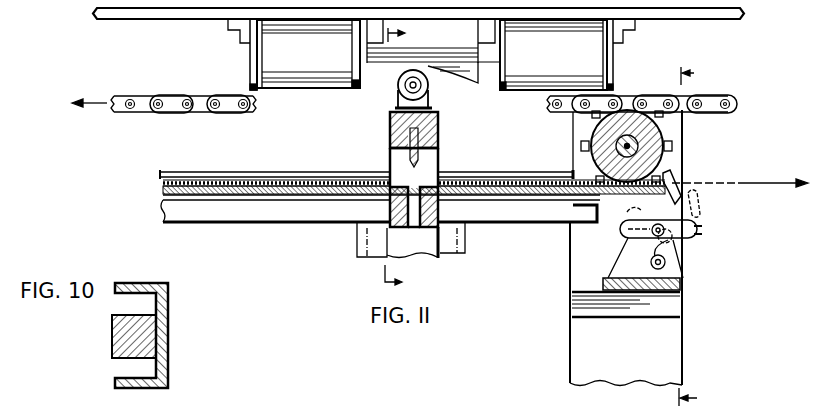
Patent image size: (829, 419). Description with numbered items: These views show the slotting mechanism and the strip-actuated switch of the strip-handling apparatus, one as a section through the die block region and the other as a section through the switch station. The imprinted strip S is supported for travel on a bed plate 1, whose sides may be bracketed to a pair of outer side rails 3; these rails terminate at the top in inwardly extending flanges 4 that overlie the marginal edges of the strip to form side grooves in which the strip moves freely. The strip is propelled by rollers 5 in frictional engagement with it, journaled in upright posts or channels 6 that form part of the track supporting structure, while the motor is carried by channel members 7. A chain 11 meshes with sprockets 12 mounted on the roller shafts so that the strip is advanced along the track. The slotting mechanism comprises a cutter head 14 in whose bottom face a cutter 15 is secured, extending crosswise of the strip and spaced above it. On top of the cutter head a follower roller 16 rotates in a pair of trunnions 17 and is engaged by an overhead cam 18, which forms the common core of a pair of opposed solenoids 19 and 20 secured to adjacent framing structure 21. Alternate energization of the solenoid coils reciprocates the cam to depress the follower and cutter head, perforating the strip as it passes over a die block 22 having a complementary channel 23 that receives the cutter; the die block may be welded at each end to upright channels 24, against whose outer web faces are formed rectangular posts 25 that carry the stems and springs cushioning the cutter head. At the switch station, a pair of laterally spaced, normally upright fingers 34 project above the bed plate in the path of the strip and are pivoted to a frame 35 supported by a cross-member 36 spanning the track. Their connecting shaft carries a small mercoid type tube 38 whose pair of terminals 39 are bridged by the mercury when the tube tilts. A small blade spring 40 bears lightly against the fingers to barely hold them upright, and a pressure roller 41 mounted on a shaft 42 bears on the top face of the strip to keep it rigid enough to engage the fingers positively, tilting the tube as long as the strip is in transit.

In FIG. 11, the bed plate 1 is at (162, 187).
In FIG. 11, the outer side rails 3 is at (172, 207).
In FIG. 11, the inwardly extending flanges 4 is at (160, 174).
In FIG. 11, the rollers 5 is at (695, 237).
In FIG. 11, the upright posts or channels 6 is at (672, 338).
In FIG. 11, the channel members 7 is at (400, 160).
In FIG. 11, the chain 11 is at (133, 97).
In FIG. 11, the sprockets 12 is at (585, 143).
In FIG. 11, the cutter head 14 is at (390, 127).
In FIG. 11, the cutter 15 is at (409, 162).
In FIG. 11, the roller 16 is at (398, 93).
In FIG. 11, the trunnions 17 is at (418, 100).
In FIG. 11, the overhead cam 18 is at (466, 70).
In FIG. 11, the solenoid 19 is at (251, 57).
In FIG. 11, the solenoid 20 is at (597, 35).
In FIG. 11, the framing structure 21 is at (143, 21).
In FIG. 11, the die block 22 is at (391, 216).
In FIG. 11, the channel 23 is at (422, 218).
In FIG. 11, the upright channels 24 is at (466, 234).
In FIG. 10, the upright channels 24 is at (168, 350).
In FIG. 11, the rectangular posts 25 is at (425, 245).
In FIG. 10, the rectangular posts 25 is at (126, 338).
In FIG. 11, the fingers 34 is at (672, 178).
In FIG. 11, the frame 35 is at (620, 262).
In FIG. 11, the cross-member 36 is at (682, 289).
In FIG. 11, the mercoid type tube 38 is at (632, 228).
In FIG. 11, the terminals 39 is at (691, 238).
In FIG. 11, the blade spring 40 is at (666, 263).
In FIG. 11, the pressure roller 41 is at (592, 123).
In FIG. 11, the shaft 42 is at (670, 140).
In FIG. 11, the strip S is at (300, 183).